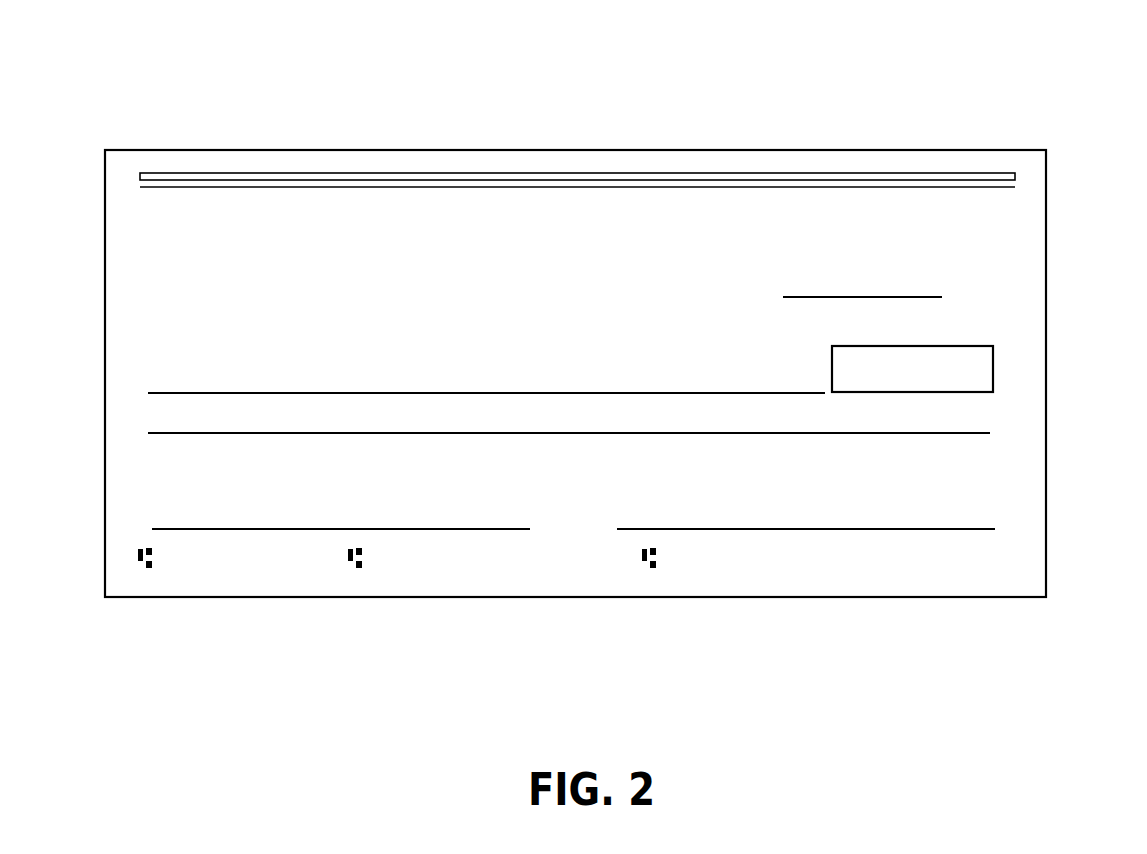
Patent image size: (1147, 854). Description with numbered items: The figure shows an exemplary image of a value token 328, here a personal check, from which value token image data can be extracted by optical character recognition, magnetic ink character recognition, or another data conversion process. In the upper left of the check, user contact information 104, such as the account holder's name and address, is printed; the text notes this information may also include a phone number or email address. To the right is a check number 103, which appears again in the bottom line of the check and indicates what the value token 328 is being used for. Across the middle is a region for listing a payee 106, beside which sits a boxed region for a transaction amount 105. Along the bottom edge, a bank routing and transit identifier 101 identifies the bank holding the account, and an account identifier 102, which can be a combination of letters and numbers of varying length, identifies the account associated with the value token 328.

The value token 328 is at (737, 118).
The bank routing and transit identifier 101 is at (233, 580).
The account identifier 102 is at (462, 580).
The check number 103 is at (1003, 235).
The user contact information 104 is at (130, 210).
The region for a transaction amount 105 is at (1003, 365).
The region for listing a payee 106 is at (130, 358).